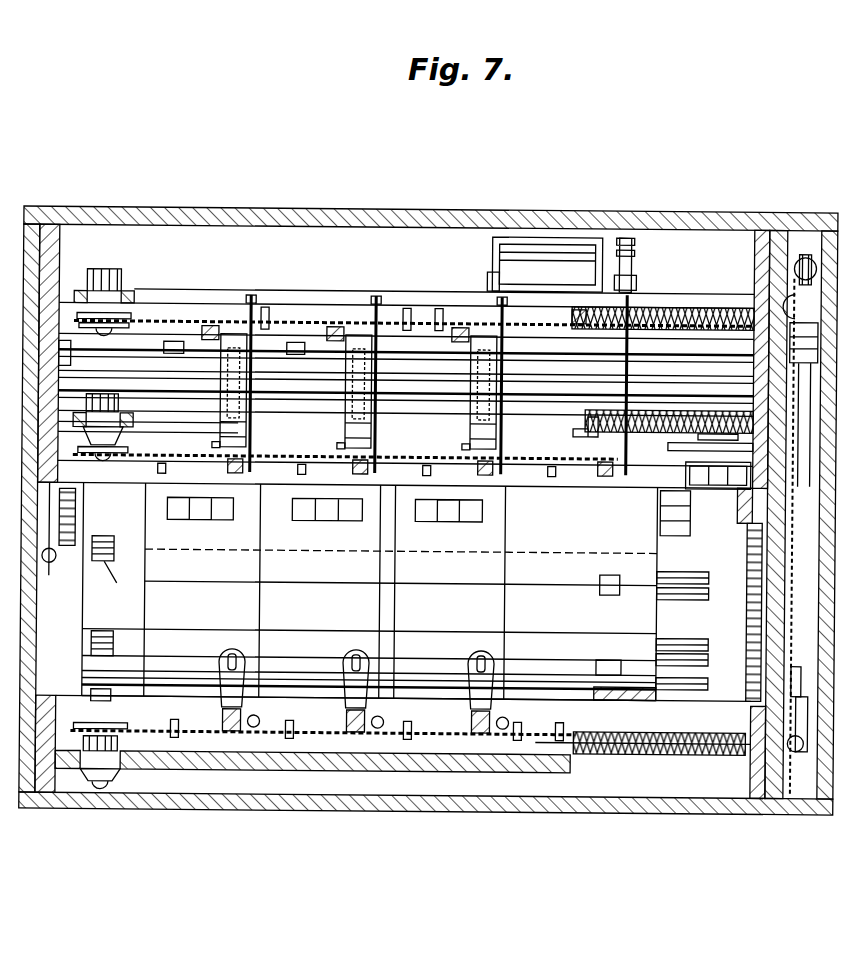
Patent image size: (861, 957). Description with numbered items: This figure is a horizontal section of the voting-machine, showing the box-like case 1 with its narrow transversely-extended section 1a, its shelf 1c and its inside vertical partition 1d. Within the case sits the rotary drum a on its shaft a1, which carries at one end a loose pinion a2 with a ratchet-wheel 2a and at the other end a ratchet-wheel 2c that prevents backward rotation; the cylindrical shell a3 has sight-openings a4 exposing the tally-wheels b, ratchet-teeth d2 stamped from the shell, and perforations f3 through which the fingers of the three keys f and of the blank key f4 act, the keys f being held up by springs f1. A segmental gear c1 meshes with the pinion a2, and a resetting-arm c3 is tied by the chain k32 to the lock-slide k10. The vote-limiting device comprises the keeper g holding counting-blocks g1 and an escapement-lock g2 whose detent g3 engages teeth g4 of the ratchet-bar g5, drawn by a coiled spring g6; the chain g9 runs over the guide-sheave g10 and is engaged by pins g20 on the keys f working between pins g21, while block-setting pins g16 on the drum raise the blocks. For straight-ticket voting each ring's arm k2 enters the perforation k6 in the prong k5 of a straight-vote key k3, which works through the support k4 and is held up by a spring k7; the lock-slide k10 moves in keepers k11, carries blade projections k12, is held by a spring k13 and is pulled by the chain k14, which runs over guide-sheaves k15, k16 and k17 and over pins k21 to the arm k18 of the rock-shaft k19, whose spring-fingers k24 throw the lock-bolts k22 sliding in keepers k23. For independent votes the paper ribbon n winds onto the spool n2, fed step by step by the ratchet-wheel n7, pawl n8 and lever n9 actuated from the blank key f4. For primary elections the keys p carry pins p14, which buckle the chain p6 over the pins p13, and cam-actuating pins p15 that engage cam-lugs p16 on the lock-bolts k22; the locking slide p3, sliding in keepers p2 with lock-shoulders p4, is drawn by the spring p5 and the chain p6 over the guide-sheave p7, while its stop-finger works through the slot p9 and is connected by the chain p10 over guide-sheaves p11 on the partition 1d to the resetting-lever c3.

The case 1 is at (282, 807).
The transversely-extended section of the case 1a is at (316, 208).
The shelf 1c is at (185, 298).
The vertical partition 1d is at (783, 237).
The primary-election keys p is at (334, 340).
The keepers p2 is at (168, 340).
The locking blade or slide p3 is at (408, 313).
The lock-shoulders p4 is at (440, 313).
The spring p5 is at (685, 318).
The chain p6 is at (266, 305).
The guide-sheave p7 is at (130, 300).
The slot p9 is at (692, 330).
The chain p10 is at (800, 277).
The guide-sheaves p11 is at (806, 280).
The pins or studs p13 is at (545, 297).
The pins p14 is at (337, 310).
The cam-actuating pins p15 is at (496, 368).
The cam-lugs p16 is at (235, 335).
The paper ribbon n is at (571, 237).
The receiving-spool n2 is at (493, 250).
The ratchet-wheel n7 is at (640, 264).
The spring-pressed pawl n8 is at (634, 234).
The lever n9 is at (632, 280).
The tally-wheels b is at (197, 488).
The rock-shaft k19 is at (80, 367).
The lock-bolts k22 is at (345, 360).
The keepers k23 is at (222, 428).
The spiral spring-fingers k24 is at (222, 345).
The arm of the rock-shaft k18 is at (796, 408).
The guide-sheave k17 is at (790, 556).
The chain k14 is at (475, 656).
The chain k32 is at (805, 693).
The keeper g is at (732, 495).
The counting-blocks g1 is at (688, 470).
The escapement-lock g2 is at (663, 512).
The detent g3 is at (693, 445).
The teeth g4 is at (725, 415).
The ratchet-bar g5 is at (678, 410).
The coiled spring g6 is at (640, 412).
The chain g9 is at (437, 455).
The guide-sheave g10 is at (128, 440).
The block-setting pins g16 is at (668, 642).
The pin or lug g20 is at (347, 450).
The pins g21 is at (349, 482).
The rotary drum a is at (655, 687).
The drum shaft a1 is at (688, 487).
The loose pinion a2 is at (745, 513).
The peripheral shell a3 is at (94, 617).
The sight-openings a4 is at (244, 515).
The ratchet-wheel 2a is at (685, 526).
The ratchet-wheel 2c is at (73, 548).
The segmental gear c1 is at (748, 658).
The resetting-arm c3 is at (807, 560).
The ratchet-teeth d2 is at (108, 688).
The keys f is at (358, 458).
The springs f1 is at (508, 378).
The perforations f3 is at (613, 655).
The blank key f4 is at (597, 493).
The projecting arm k2 is at (480, 660).
The straight-vote key k3 is at (342, 715).
The support k4 is at (373, 767).
The prong k5 is at (345, 638).
The perforation k6 is at (359, 642).
The spring k7 is at (240, 755).
The lock-slide k10 is at (440, 748).
The keepers k11 is at (381, 709).
The blade projections k12 is at (285, 715).
The spring k13 is at (672, 732).
The guide-sheave k15 is at (90, 726).
The guide-sheave k16 is at (750, 752).
The pins k21 is at (172, 748).